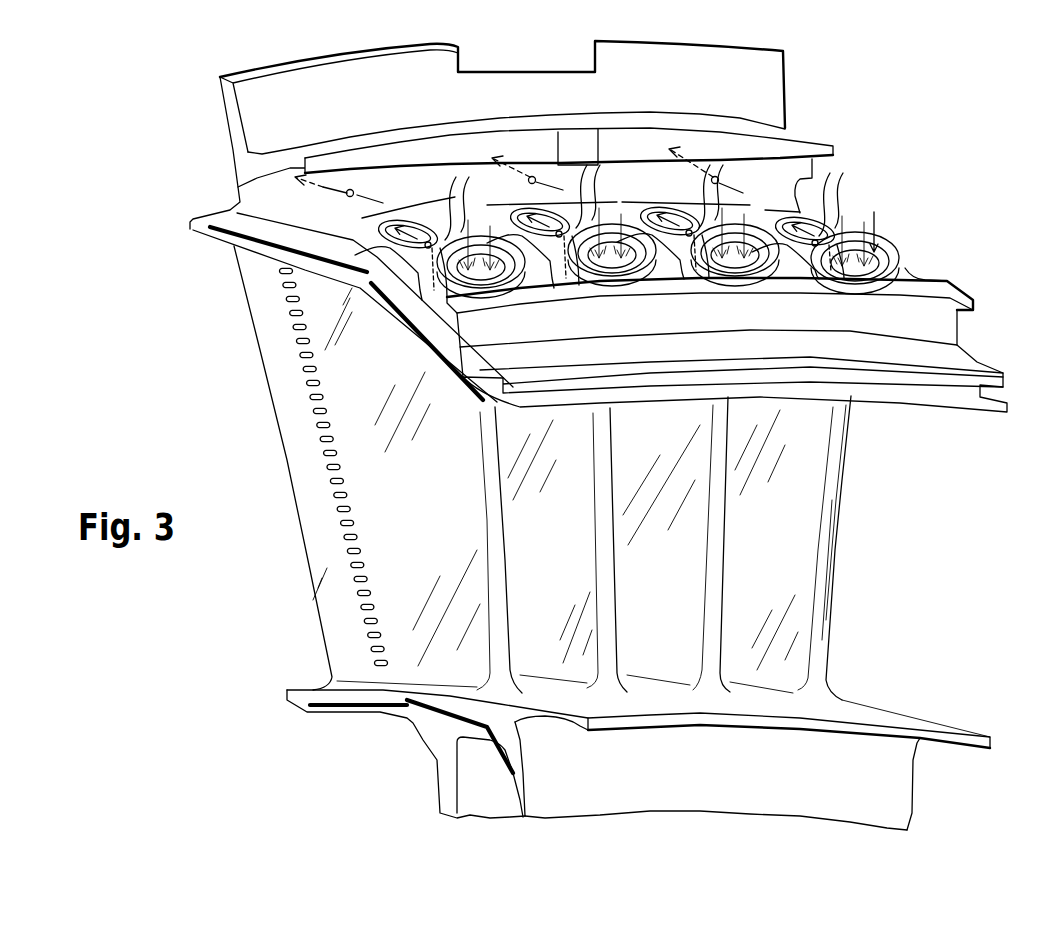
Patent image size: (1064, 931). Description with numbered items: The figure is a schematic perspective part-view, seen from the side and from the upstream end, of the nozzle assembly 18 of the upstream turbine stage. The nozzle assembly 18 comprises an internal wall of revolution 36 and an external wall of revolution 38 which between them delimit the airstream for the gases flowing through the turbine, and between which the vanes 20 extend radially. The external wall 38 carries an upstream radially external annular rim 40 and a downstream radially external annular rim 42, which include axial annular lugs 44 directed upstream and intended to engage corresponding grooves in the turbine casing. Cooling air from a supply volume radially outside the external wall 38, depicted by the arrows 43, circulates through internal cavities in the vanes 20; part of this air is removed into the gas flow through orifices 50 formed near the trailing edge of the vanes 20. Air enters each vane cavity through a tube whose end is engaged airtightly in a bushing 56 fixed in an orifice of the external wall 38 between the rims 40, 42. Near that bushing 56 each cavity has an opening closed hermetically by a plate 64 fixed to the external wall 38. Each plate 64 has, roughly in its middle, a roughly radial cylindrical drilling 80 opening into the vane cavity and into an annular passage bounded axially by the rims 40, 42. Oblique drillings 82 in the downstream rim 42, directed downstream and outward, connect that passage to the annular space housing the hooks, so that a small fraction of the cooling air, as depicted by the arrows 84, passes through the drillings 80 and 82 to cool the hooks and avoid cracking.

The nozzle assembly 18 is at (948, 603).
The vane 20 is at (823, 548).
The internal wall of revolution 36 is at (303, 688).
The external wall of revolution 38 is at (957, 410).
The upstream radially external annular rim 40 is at (940, 327).
The downstream radially external annular rim 42 is at (755, 93).
The arrows (cooling air supply) 43 is at (874, 212).
The axial annular lug 44 is at (833, 147).
The orifice 50 is at (334, 451).
The bushing 56 is at (905, 268).
The plate 64 is at (382, 240).
The drilling (in plate) 80 is at (455, 236).
The oblique drilling (in downstream rim) 82 is at (533, 177).
The arrows (cooling airflow to hooks) 84 is at (414, 234).